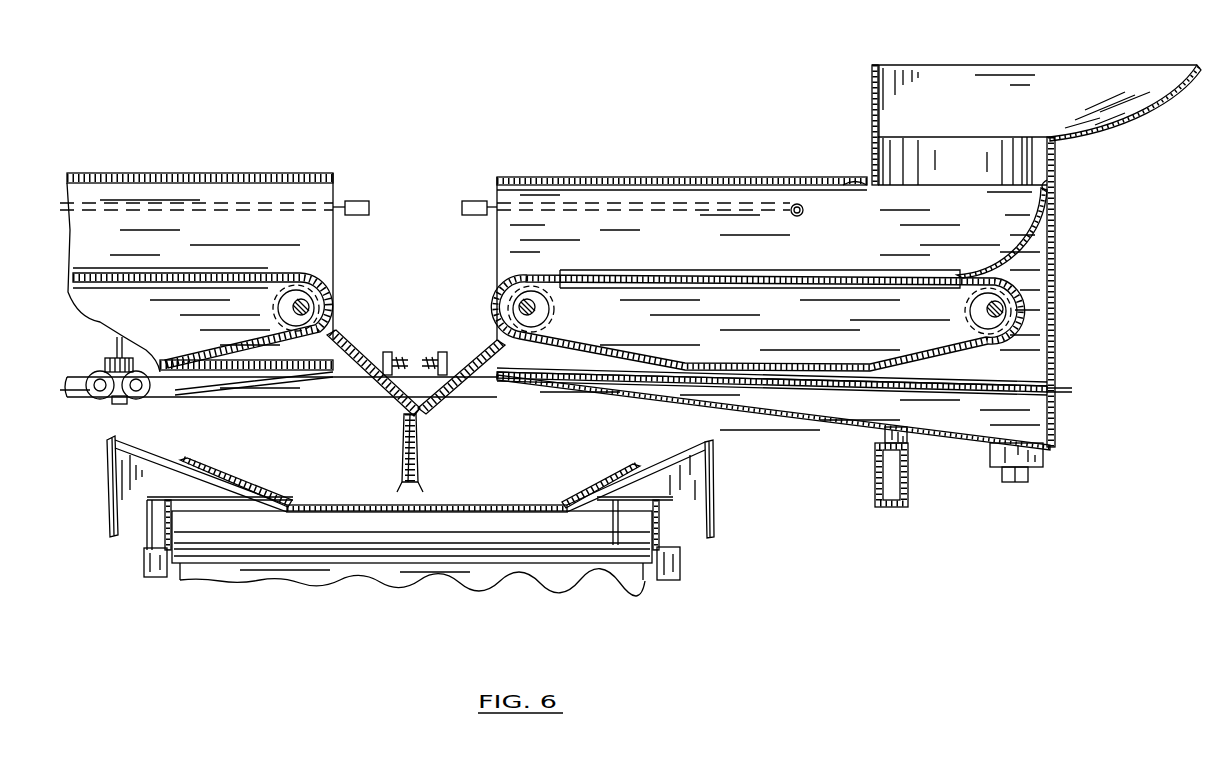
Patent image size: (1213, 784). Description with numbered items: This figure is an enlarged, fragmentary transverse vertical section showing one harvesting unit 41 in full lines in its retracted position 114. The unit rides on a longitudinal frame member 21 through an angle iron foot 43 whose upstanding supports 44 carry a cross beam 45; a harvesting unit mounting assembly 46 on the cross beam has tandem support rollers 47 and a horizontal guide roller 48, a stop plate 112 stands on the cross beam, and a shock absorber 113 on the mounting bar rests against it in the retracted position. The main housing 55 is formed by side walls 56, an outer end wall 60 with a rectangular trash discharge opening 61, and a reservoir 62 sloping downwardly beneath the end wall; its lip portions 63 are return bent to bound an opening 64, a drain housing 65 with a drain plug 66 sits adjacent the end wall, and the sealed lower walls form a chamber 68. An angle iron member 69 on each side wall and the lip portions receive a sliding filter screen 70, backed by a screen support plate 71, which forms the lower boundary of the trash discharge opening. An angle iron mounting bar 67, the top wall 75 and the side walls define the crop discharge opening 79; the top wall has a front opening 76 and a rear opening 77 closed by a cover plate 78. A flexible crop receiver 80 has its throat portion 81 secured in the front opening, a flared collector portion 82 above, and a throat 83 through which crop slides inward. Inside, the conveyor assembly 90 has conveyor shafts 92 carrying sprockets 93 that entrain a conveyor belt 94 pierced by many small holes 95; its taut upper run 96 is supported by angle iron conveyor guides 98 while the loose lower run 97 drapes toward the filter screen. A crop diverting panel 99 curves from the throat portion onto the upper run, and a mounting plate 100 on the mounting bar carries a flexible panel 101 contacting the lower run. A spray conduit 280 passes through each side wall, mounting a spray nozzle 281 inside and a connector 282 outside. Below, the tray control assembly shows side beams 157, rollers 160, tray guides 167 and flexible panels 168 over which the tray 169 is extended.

The longitudinal frame member 21 is at (907, 494).
The harvesting unit 41 is at (1060, 288).
The angle iron foot 43 is at (874, 460).
The support 44 is at (884, 434).
The cross beam 45 is at (348, 388).
The harvesting unit mounting assembly 46 is at (110, 352).
The support roller 47 is at (136, 399).
The horizontal guide roller 48 is at (105, 364).
The main housing 55 is at (1058, 312).
The side wall 56 is at (837, 251).
The outer end wall 60 is at (1057, 264).
The trash discharge opening 61 is at (1055, 358).
The reservoir 62 is at (745, 408).
The lip portion 63 is at (1032, 394).
The opening 64 is at (898, 390).
The drain housing 65 is at (1045, 458).
The drain plug 66 is at (1022, 482).
The angle iron mounting bar 67 is at (487, 380).
The chamber 68 is at (1056, 420).
The angle iron member 69 is at (996, 380).
The filter screen 70 is at (1070, 390).
The screen support plate 71 is at (765, 386).
The top wall 75 is at (856, 180).
The front opening 76 is at (1053, 172).
The rear opening 77 is at (532, 180).
The cover plate 78 is at (584, 180).
The crop discharge opening 79 is at (497, 249).
The crop receiver 80 is at (1130, 115).
The throat portion 81 is at (870, 158).
The flared collector portion 82 is at (1093, 65).
The throat 83 is at (942, 140).
The conveyor assembly 90 is at (855, 228).
The conveyor shaft 92 is at (543, 317).
The sprocket 93 is at (549, 304).
The conveyor belt 94 is at (500, 293).
The hole 95 is at (696, 275).
The upper run 96 is at (801, 274).
The lower run 97 is at (580, 354).
The angle iron conveyor guide 98 is at (858, 274).
The crop diverting panel 99 is at (1022, 234).
The mounting plate 100 is at (436, 416).
The flexible panel 101 is at (404, 440).
The stop plate 112 is at (386, 352).
The shock absorber 113 is at (440, 350).
The retracted position 114 is at (551, 160).
The side beam 157 is at (144, 566).
The roller 160 is at (366, 530).
The tray guide 167 is at (112, 490).
The flexible panel 168 is at (232, 494).
The tray 169 is at (402, 504).
The spray conduit 280 is at (612, 208).
The spray nozzle 281 is at (791, 208).
The connector 282 is at (478, 202).